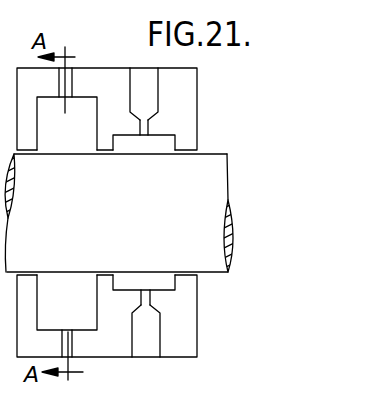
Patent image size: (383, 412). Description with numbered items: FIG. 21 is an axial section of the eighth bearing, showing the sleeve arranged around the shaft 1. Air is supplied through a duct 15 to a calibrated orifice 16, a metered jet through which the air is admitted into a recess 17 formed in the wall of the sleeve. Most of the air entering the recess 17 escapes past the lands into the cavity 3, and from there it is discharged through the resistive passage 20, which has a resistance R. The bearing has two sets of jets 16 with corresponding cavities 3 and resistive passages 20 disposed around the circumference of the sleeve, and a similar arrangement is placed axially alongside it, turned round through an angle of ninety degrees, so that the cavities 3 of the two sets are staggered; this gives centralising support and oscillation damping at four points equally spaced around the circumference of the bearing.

The tube 1 is at (118, 223).
The cavity 3 is at (70, 147).
The duct 15 is at (149, 82).
The calibrated orifice 16 is at (147, 126).
The recess 17 is at (153, 143).
The resistive passage 20 is at (70, 79).